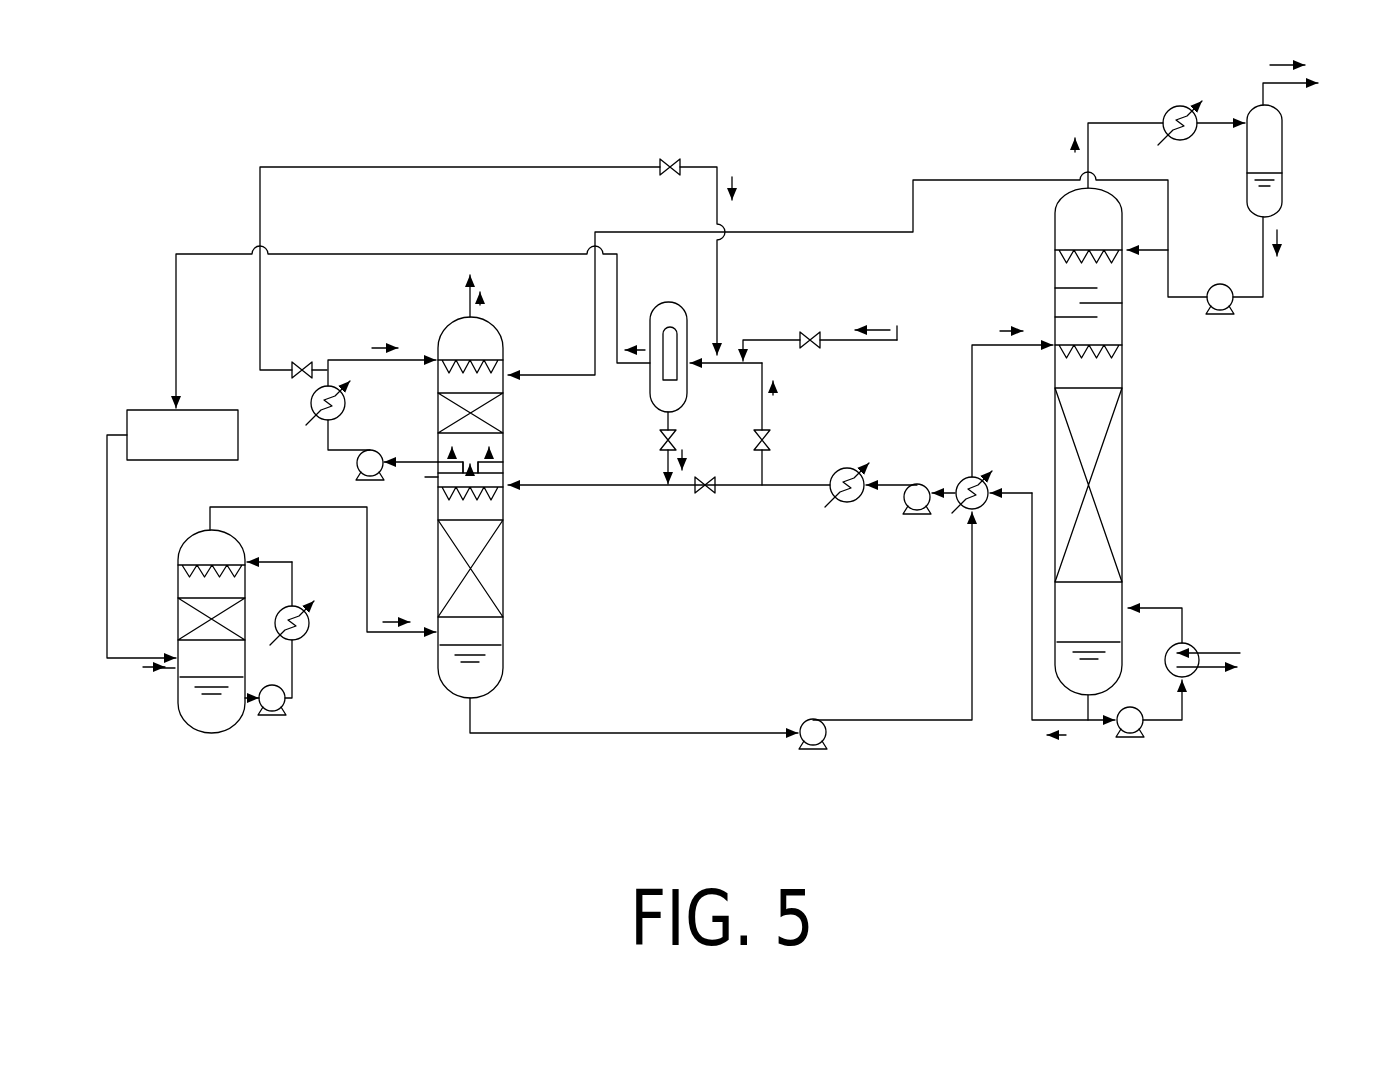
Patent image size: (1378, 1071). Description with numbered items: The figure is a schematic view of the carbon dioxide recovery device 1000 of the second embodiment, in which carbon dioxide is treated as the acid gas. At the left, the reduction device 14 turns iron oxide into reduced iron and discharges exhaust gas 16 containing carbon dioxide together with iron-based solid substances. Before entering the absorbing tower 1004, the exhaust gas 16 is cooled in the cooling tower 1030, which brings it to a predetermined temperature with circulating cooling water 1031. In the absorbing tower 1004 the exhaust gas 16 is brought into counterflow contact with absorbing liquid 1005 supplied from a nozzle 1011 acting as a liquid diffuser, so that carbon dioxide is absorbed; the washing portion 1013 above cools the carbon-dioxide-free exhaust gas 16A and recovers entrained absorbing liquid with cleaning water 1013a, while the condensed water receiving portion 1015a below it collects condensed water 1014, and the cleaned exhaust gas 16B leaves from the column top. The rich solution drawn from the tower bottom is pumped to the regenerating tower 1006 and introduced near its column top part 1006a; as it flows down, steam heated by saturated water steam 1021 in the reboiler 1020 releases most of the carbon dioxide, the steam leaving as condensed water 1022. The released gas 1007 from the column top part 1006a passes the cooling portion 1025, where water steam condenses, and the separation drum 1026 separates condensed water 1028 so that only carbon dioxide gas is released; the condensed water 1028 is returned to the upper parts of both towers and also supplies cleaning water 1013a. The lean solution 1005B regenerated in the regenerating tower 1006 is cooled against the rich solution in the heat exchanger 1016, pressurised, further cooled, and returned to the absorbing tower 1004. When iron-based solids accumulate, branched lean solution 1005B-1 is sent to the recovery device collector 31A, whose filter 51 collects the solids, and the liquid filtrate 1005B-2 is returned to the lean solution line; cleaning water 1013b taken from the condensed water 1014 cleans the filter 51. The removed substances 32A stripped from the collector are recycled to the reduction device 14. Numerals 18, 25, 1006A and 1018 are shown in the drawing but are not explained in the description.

The reduction device 14 is at (224, 408).
The exhaust gas 16 is at (160, 678).
The CO2-free exhaust gas 16A is at (436, 477).
The cleaned exhaust gas 16B is at (485, 300).
The absorption liquid inlet line 18 is at (404, 620).
The supply line 25 is at (870, 326).
The recovery device collector 31A is at (714, 334).
The removed substances 32A is at (634, 348).
The filter 51 is at (667, 352).
The CO2 recovery device 1000 is at (921, 104).
The absorbing tower 1004 is at (474, 486).
The CO2 absorbing liquid 1005 is at (530, 478).
The lean solution 1005B is at (1063, 740).
The branched lean solution 1005B-1 is at (778, 395).
The liquid filtrate 1005B-2 is at (684, 452).
The regenerating tower 1006 is at (1018, 238).
The column top part 1006a is at (1058, 210).
The regeneration tower section 1006A is at (1005, 328).
The released gas 1007 is at (1070, 146).
The nozzle 1011 is at (436, 366).
The washing portion 1013 is at (505, 399).
The cleaning water 1013a is at (372, 346).
The cleaning water 1013b is at (738, 190).
The condensed water 1014 is at (440, 462).
The condensed water receiving portion 1015a is at (500, 470).
The heat exchanger 1016 is at (980, 477).
The absorption section 1018 is at (505, 573).
The reboiler 1020 is at (1195, 678).
The saturated water steam 1021 is at (1215, 652).
The condensed water 1022 is at (1250, 672).
The cooling portion 1025 is at (1175, 105).
The separation drum 1026 is at (1246, 170).
The condensed water 1028 is at (1283, 246).
The cooling tower 1030 is at (175, 546).
The circulating cooling water 1031 is at (262, 556).